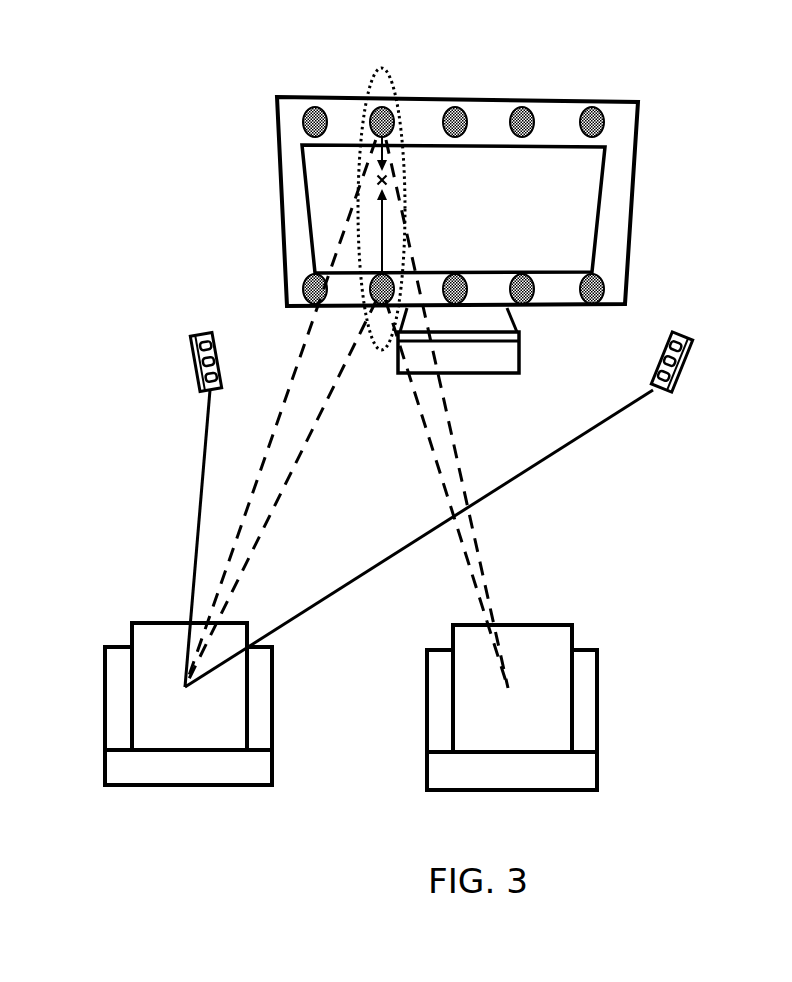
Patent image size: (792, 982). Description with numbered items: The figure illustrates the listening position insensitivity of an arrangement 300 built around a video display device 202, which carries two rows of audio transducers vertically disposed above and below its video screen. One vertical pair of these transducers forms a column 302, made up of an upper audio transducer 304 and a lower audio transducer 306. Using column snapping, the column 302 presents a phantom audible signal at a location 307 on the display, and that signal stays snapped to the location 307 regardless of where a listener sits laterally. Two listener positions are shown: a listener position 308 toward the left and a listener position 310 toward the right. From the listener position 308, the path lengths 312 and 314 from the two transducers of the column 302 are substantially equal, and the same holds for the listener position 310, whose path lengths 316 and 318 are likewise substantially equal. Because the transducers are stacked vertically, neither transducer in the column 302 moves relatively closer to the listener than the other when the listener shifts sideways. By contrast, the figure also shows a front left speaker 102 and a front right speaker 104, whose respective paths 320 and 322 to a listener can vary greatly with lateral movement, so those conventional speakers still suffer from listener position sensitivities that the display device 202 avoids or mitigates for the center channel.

The system environment 300 is at (714, 59).
The video display device 202 is at (418, 235).
The column 302 is at (351, 195).
The audio transducer 304 is at (388, 112).
The audio transducer 306 is at (372, 280).
The location 307 is at (375, 181).
The path length 312 is at (280, 413).
The path length 314 is at (281, 493).
The path length 316 is at (447, 494).
The path length 318 is at (447, 414).
The path 320 is at (183, 538).
The path 322 is at (419, 538).
The front left speaker 102 is at (172, 344).
The front right speaker 104 is at (709, 346).
The listener position 308 is at (141, 704).
The listener position 310 is at (555, 707).